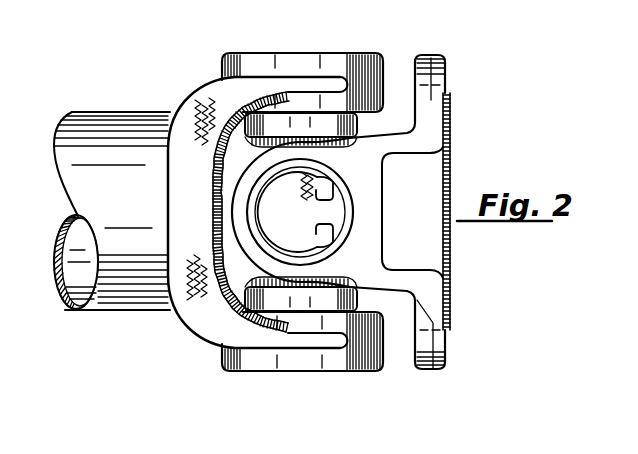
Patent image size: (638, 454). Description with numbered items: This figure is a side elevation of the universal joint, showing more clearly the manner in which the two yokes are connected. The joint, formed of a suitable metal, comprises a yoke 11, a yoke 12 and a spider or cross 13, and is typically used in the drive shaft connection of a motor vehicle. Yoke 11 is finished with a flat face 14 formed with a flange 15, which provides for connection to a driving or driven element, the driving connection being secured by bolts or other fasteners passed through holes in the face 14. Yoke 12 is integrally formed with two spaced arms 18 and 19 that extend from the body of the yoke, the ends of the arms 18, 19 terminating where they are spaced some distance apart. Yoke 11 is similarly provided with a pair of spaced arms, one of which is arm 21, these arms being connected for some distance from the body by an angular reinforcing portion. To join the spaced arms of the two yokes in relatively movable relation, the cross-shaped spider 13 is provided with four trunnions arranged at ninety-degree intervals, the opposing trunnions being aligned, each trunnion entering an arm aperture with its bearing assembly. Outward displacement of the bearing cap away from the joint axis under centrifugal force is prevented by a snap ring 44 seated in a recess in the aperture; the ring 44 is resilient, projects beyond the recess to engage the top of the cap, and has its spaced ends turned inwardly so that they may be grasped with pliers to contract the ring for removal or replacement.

The yoke 11 is at (447, 62).
The yoke 12 is at (213, 313).
The spider or cross 13 is at (350, 137).
The flat face 14 is at (447, 80).
The flange 15 is at (452, 108).
The arm 18 is at (300, 77).
The arm 19 is at (347, 365).
The arm 21 is at (367, 273).
The snap ring 44 is at (256, 224).